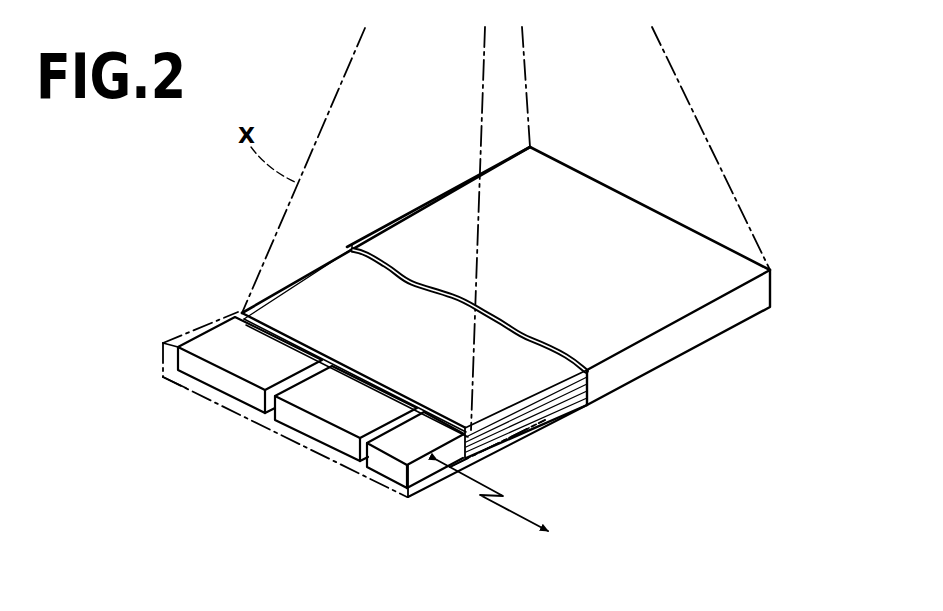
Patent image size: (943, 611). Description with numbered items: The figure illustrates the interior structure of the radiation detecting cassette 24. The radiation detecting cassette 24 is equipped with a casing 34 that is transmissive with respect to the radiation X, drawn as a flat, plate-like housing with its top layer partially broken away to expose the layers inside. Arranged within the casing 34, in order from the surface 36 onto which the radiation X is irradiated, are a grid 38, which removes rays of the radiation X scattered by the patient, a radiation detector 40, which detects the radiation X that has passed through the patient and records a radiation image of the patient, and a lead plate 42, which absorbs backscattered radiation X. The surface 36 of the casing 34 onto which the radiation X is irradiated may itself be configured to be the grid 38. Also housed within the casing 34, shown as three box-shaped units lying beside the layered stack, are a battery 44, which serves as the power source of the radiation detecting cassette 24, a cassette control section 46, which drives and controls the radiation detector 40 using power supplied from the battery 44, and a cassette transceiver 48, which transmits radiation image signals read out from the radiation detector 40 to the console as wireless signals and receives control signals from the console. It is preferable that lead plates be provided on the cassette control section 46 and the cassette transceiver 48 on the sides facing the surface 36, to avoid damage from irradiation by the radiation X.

The radiation detecting cassette 24 is at (412, 199).
The casing 34 is at (653, 352).
The surface 36 is at (637, 220).
The grid 38 is at (530, 420).
The radiation detector 40 is at (518, 438).
The lead plate 42 is at (500, 445).
The battery 44 is at (197, 390).
The cassette control section 46 is at (320, 430).
The cassette transceiver 48 is at (390, 465).